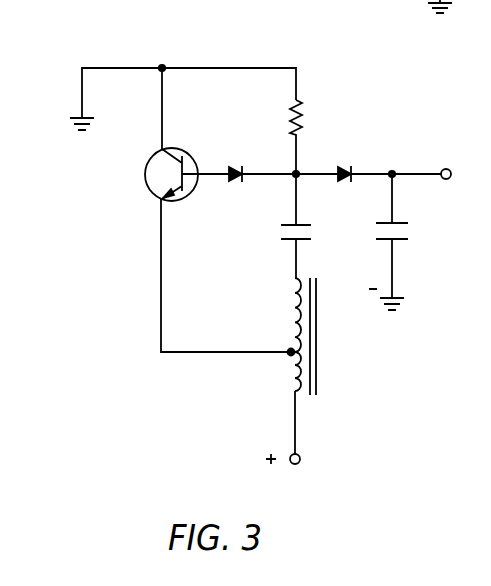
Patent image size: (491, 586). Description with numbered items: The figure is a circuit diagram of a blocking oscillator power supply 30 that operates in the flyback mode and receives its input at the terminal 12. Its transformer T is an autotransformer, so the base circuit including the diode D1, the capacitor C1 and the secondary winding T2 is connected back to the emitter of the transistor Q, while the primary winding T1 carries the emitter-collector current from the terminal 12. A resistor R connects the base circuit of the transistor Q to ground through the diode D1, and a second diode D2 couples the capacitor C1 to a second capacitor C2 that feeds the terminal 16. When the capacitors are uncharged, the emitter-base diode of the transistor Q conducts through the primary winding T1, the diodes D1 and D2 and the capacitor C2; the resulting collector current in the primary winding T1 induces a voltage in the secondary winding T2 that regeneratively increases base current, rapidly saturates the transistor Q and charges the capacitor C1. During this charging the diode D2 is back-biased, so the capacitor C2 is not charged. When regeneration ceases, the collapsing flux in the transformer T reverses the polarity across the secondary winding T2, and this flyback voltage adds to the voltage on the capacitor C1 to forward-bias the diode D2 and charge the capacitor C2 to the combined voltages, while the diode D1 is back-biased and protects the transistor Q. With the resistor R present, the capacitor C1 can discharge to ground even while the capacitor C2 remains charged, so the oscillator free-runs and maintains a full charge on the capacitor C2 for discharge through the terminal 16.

The blocking oscillator power supply 30 is at (416, 118).
The terminal 16 is at (451, 174).
The input terminal 12 is at (300, 462).
The transistor Q is at (148, 190).
The resistor R is at (301, 126).
The diode D1 is at (240, 183).
The second diode D2 is at (349, 183).
The capacitor C1 is at (313, 228).
The second capacitor C2 is at (409, 237).
The transformer T is at (300, 336).
The primary winding T1 is at (293, 373).
The secondary winding T2 is at (294, 302).